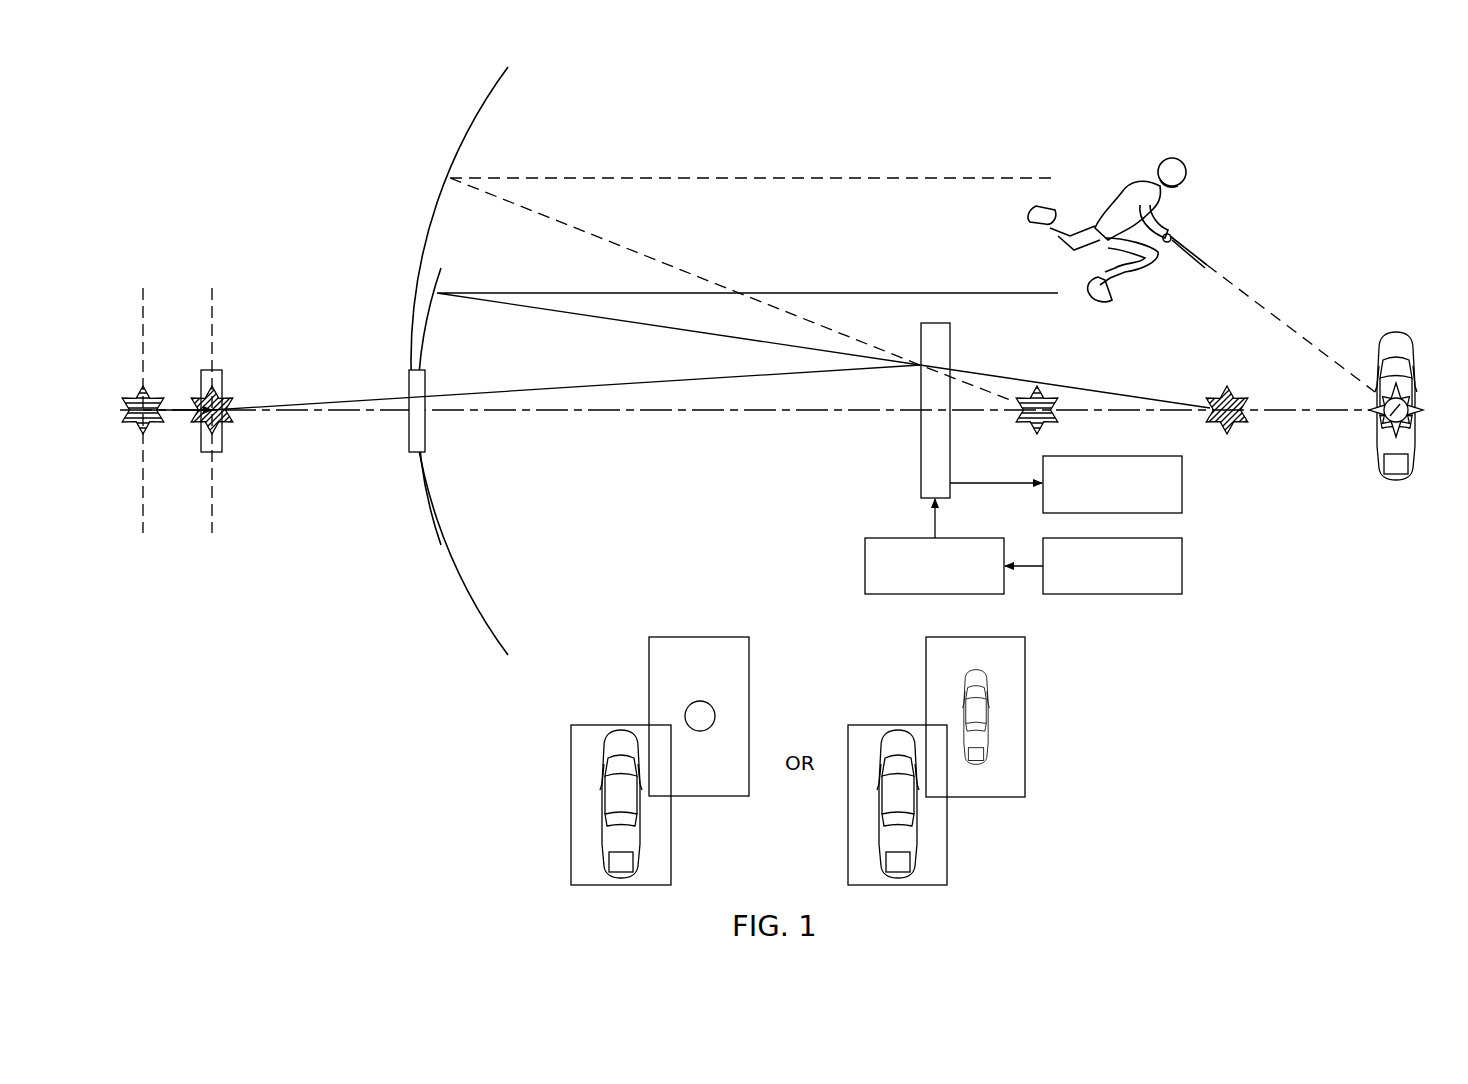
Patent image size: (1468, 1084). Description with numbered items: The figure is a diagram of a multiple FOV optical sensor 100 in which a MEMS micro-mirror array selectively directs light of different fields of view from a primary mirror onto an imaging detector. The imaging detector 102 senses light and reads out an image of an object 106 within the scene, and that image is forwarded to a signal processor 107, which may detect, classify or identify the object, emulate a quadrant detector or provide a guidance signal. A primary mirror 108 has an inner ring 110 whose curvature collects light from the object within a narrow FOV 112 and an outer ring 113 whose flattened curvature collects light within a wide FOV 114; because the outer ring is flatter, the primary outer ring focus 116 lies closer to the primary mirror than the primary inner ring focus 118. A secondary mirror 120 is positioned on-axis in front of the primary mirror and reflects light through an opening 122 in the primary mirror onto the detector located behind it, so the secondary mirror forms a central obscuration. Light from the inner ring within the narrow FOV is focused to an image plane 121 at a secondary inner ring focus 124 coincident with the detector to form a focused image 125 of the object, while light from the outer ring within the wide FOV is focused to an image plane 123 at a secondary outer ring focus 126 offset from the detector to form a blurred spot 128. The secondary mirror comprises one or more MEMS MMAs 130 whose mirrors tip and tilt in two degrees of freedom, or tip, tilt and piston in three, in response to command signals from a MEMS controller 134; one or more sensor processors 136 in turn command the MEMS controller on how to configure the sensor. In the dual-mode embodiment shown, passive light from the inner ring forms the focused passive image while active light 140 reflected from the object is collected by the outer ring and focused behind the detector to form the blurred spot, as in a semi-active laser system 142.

The multiple FOV optical sensor 100 is at (1359, 117).
The imaging detector 102 is at (223, 378).
The object 106 is at (1396, 332).
The signal processor 107 is at (1183, 490).
The primary mirror 108 is at (431, 172).
The inner ring 110 is at (430, 333).
The narrow FOV 112 is at (940, 293).
The outer ring 113 is at (476, 127).
The wide FOV 114 is at (940, 180).
The primary outer ring focus 116 is at (1023, 427).
The primary inner ring focus 118 is at (1240, 428).
The secondary mirror 120 is at (902, 453).
The image plane 121 is at (215, 333).
The opening 122 is at (408, 438).
The image plane 123 is at (146, 333).
The secondary inner ring focus 124 is at (226, 428).
The focused image 125 is at (973, 637).
The secondary outer ring focus 126 is at (134, 428).
The blurred spot 128 is at (696, 637).
The MEMS micro-mirror array 130 is at (951, 342).
The MEMS controller 134 is at (865, 572).
The sensor processor 136 is at (1183, 572).
The active light 140 is at (1380, 432).
The semi-active laser system 142 is at (1190, 165).